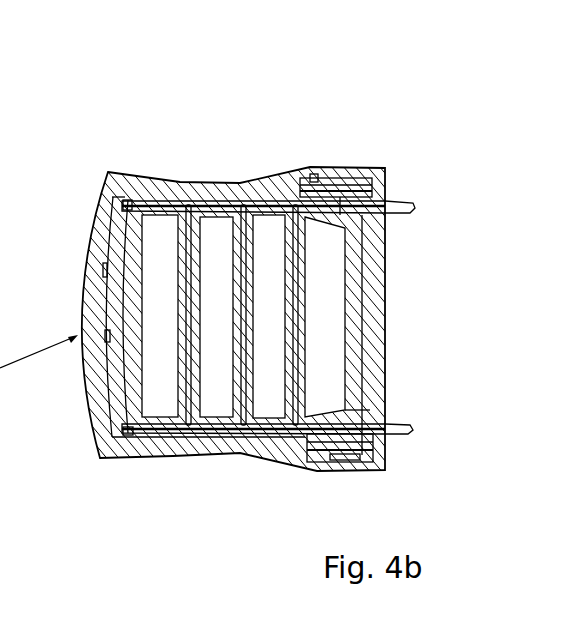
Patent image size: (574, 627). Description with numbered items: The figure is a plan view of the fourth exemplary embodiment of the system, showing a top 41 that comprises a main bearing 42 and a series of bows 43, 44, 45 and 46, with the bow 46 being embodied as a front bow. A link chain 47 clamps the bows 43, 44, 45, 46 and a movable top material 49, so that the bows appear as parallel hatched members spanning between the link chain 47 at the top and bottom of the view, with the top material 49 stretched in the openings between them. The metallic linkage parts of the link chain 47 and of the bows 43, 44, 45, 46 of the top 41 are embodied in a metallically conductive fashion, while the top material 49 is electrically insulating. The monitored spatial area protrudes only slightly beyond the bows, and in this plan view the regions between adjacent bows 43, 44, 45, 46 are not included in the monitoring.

The top 41 is at (279, 103).
The main bearing 42 is at (362, 212).
The bow 43 is at (288, 200).
The bow 44 is at (235, 188).
The bow 45 is at (171, 188).
The front bow 46 is at (93, 227).
The link chain 47 is at (213, 438).
The top material 49 is at (202, 322).